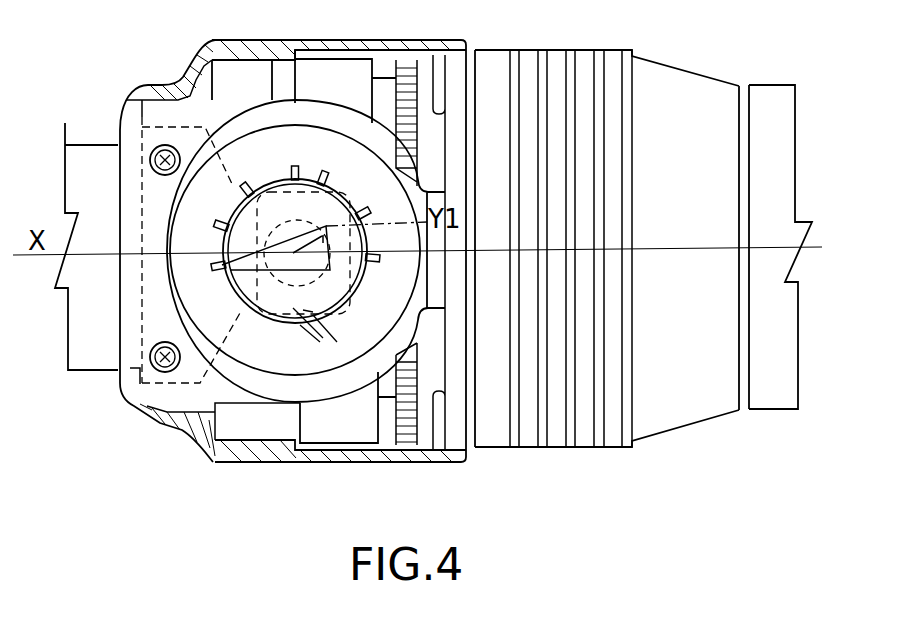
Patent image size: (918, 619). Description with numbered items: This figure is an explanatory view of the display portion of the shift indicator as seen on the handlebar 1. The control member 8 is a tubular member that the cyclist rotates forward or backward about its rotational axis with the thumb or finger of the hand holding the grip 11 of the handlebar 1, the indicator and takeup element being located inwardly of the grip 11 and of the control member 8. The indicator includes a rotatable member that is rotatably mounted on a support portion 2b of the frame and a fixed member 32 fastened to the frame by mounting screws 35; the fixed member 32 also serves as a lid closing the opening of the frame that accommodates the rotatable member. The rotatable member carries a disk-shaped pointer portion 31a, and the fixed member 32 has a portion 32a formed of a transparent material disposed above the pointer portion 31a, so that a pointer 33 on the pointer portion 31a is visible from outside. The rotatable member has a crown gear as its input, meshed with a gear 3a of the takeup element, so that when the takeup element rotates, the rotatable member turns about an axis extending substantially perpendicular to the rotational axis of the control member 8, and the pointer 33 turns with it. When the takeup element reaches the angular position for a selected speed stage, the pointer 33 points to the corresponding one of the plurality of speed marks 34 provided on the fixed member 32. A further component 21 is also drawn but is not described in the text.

The handlebar 1 is at (87, 145).
The support portion 2b is at (430, 456).
The gear 3a is at (407, 65).
The control member 8 is at (670, 435).
The grip 11 is at (765, 410).
The mounting block 21 is at (342, 423).
The pointer portion 31a is at (262, 203).
The fixed member 32 is at (248, 110).
The transparent portion 32a is at (325, 143).
The pointer 33 is at (258, 265).
The speed marks 34 is at (217, 225).
The mounting screws 35 is at (150, 158).